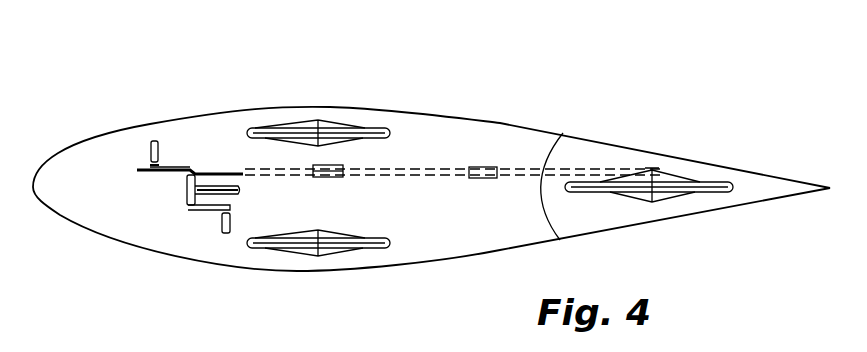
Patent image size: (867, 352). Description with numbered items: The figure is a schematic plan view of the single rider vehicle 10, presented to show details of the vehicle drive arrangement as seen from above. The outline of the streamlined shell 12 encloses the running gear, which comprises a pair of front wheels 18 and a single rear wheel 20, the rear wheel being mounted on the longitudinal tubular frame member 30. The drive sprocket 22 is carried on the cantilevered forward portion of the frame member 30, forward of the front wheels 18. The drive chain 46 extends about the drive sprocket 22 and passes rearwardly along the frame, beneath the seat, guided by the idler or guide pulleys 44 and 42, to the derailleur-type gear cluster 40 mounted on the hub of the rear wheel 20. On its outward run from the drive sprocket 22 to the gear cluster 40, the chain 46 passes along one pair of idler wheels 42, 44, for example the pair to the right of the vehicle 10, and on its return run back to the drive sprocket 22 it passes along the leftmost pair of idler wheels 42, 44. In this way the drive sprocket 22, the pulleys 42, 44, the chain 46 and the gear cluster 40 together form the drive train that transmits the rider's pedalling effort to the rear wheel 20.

The single rider vehicle 10 is at (689, 35).
The streamlined shell 12 is at (459, 111).
The front wheels 18 is at (374, 127).
The rear wheel 20 is at (713, 180).
The drive sprocket 22 is at (137, 170).
The tubular frame member 30 is at (239, 196).
The gear cluster 40 is at (652, 168).
The idler pulleys 42 is at (481, 167).
The idler pulleys 44 is at (343, 173).
The drive chain 46 is at (427, 175).